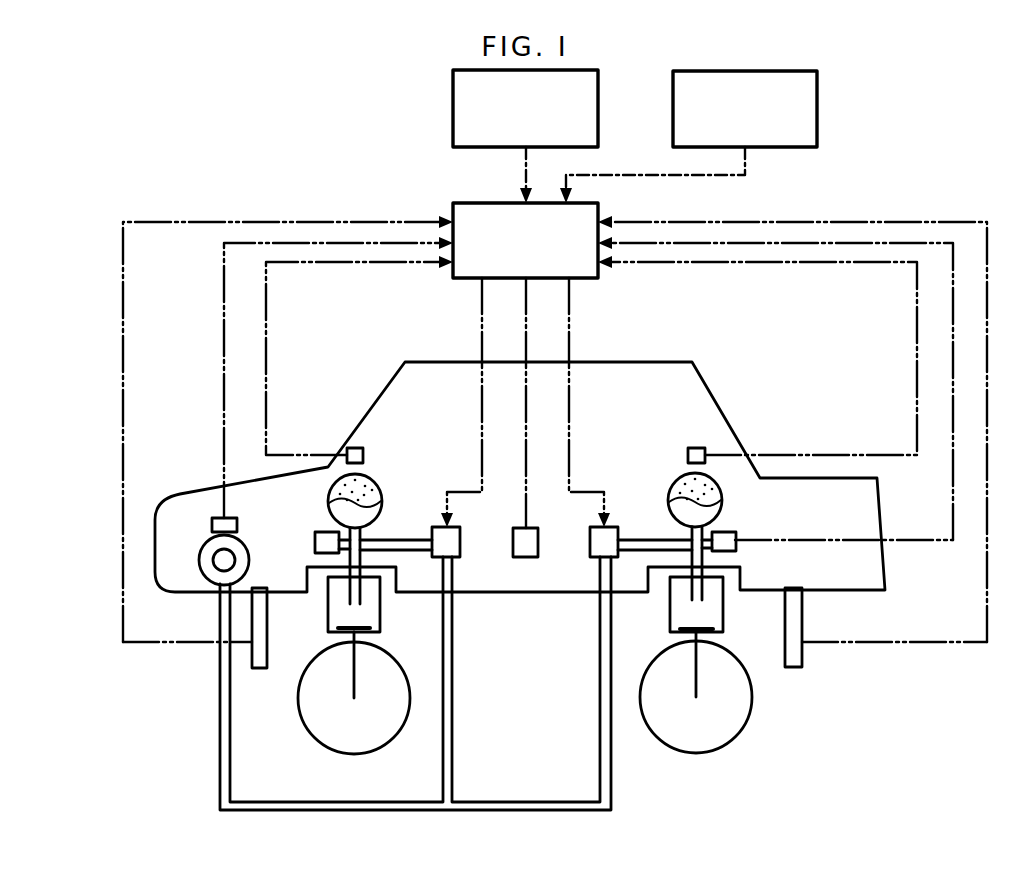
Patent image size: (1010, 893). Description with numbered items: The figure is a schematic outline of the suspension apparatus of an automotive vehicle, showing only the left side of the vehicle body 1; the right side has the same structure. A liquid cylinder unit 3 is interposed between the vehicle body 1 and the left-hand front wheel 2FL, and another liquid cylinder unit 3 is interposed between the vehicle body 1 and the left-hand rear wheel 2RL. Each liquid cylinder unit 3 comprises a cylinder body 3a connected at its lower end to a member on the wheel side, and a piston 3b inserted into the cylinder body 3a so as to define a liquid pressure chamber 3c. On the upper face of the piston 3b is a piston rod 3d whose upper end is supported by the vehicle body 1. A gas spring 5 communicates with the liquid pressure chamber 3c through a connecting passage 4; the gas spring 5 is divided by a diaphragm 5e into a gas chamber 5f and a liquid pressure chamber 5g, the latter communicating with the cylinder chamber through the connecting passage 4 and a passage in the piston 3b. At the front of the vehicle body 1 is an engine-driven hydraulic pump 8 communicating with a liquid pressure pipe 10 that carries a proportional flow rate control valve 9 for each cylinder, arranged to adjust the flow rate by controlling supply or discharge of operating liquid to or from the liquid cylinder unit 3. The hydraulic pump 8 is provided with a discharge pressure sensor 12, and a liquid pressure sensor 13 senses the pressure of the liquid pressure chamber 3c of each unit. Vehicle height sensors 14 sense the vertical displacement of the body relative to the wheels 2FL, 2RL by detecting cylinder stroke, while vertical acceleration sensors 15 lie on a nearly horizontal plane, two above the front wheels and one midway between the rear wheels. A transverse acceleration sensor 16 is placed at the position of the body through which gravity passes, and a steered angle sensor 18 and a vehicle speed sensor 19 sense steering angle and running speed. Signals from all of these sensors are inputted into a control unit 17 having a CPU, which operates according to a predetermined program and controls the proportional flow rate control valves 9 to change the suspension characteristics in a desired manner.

The vehicle body 1 is at (652, 352).
The left-hand front wheel 2FL is at (382, 744).
The left-hand rear wheel 2RL is at (724, 743).
The liquid cylinder unit 3 is at (526, 637).
The cylinder body 3a is at (381, 614).
The piston 3b is at (328, 616).
The liquid pressure chamber 3c is at (525, 617).
The piston rod 3d is at (320, 569).
The connecting passage 4 is at (362, 537).
The gas spring 5 is at (492, 492).
The diaphragm 5e is at (328, 502).
The gas chamber 5f is at (378, 482).
The liquid pressure chamber 5g is at (346, 511).
The hydraulic pump 8 is at (200, 567).
The proportional flow rate control valve 9 is at (460, 546).
The liquid pressure pipe 10 is at (406, 810).
The discharge pressure sensor 12 is at (212, 525).
The liquid pressure sensor 13 is at (315, 544).
The vehicle height sensor 14 is at (259, 668).
The vertical acceleration sensor 15 is at (356, 448).
The transverse acceleration sensor 16 is at (530, 528).
The control unit 17 is at (466, 203).
The steered angle sensor 18 is at (453, 90).
The vehicle speed sensor 19 is at (817, 90).